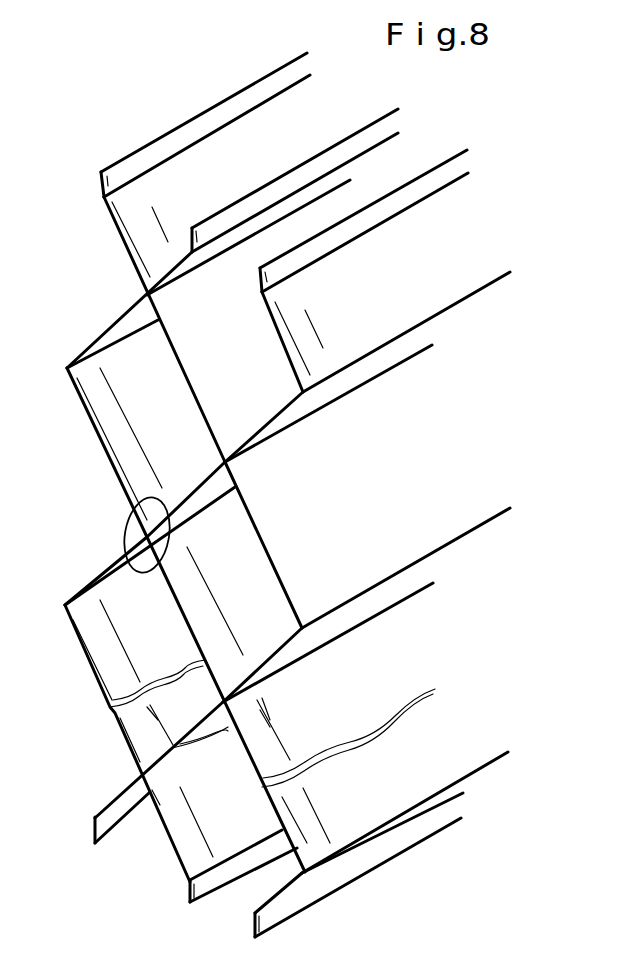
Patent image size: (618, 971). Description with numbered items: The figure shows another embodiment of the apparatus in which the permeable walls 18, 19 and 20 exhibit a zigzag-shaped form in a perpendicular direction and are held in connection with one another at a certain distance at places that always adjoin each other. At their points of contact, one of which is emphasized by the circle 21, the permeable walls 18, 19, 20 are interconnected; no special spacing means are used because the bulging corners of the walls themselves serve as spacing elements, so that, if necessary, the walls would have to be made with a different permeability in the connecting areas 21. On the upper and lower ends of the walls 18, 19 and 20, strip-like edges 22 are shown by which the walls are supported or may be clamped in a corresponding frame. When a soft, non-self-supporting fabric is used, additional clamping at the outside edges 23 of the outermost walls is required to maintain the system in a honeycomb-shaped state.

The permeable wall 18 is at (93, 432).
The permeable wall 19 is at (197, 488).
The permeable wall 20 is at (263, 547).
The circle 21 is at (130, 525).
The strip-like edges 22 is at (177, 142).
The outside edges 23 is at (85, 349).